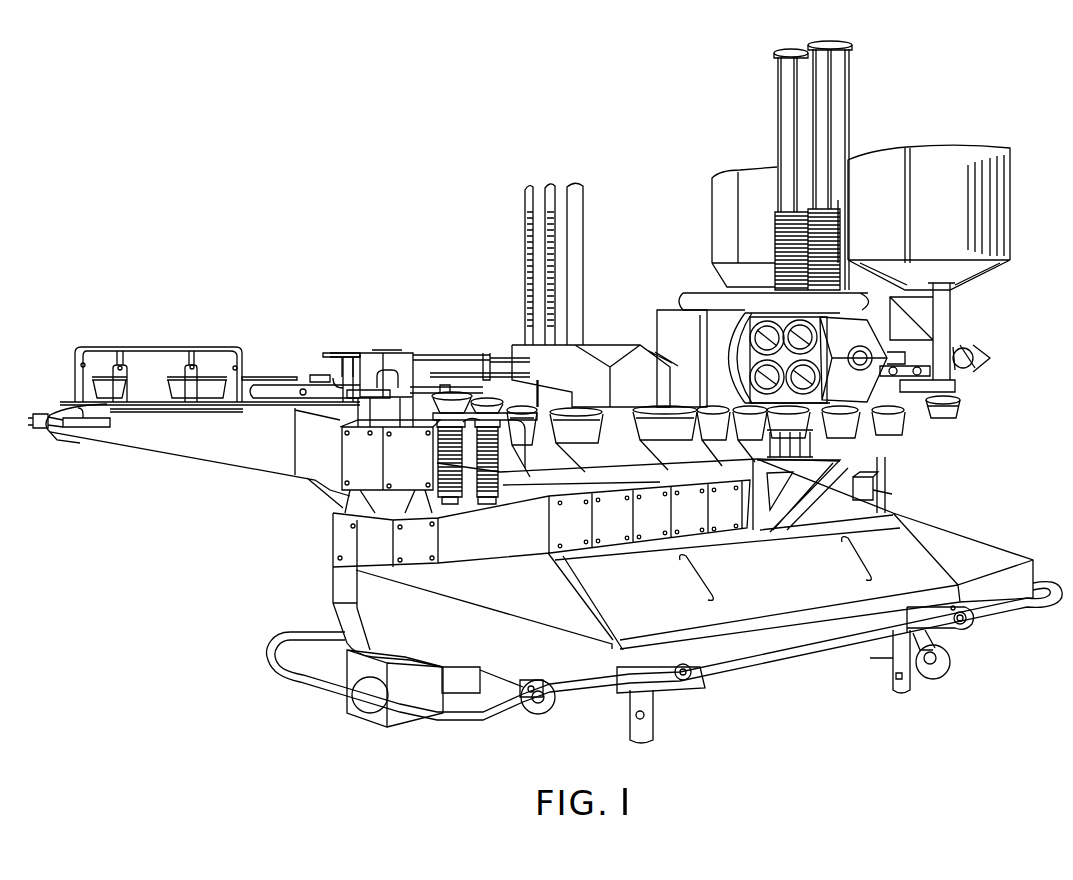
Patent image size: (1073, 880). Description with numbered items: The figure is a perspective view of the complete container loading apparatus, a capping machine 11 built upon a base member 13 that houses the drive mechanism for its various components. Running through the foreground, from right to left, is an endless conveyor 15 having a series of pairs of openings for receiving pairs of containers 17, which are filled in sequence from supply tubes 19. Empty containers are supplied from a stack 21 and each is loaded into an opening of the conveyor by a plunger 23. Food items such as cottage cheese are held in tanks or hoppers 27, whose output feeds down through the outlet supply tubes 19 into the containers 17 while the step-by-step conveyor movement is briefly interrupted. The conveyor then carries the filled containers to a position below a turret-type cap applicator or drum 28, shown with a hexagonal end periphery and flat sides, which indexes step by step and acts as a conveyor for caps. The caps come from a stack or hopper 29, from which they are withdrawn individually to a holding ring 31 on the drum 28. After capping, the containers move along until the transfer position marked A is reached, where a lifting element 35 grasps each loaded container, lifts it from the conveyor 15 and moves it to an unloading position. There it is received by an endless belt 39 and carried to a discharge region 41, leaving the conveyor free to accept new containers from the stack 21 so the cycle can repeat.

The capping machine 11 is at (348, 276).
The base member 13 is at (987, 551).
The endless conveyor 15 is at (898, 434).
The containers 17 is at (932, 421).
The supply tubes 19 is at (948, 318).
The stack 21 is at (570, 272).
The plunger 23 is at (532, 390).
The hoppers 27 is at (1000, 193).
The drum 28 is at (922, 389).
The hopper 29 is at (850, 123).
The holding ring 31 is at (752, 325).
The lifting element 35 is at (438, 468).
The endless belt 39 is at (250, 408).
The discharge region 41 is at (50, 412).